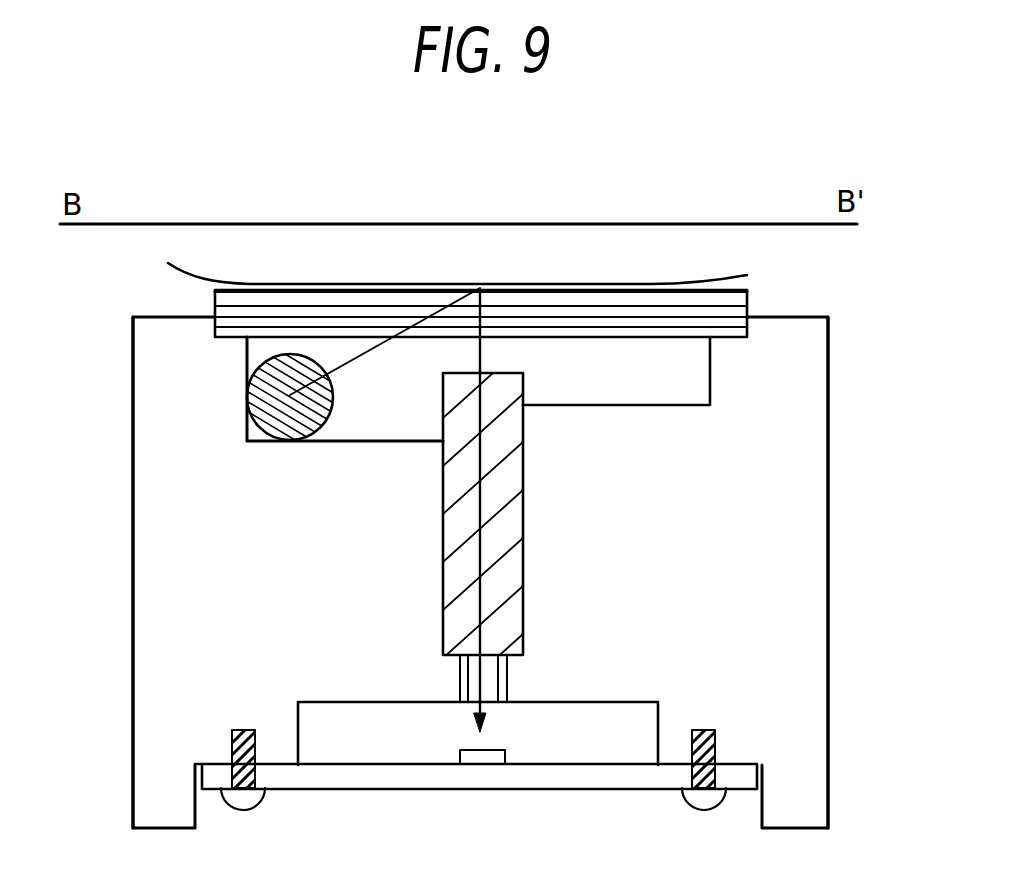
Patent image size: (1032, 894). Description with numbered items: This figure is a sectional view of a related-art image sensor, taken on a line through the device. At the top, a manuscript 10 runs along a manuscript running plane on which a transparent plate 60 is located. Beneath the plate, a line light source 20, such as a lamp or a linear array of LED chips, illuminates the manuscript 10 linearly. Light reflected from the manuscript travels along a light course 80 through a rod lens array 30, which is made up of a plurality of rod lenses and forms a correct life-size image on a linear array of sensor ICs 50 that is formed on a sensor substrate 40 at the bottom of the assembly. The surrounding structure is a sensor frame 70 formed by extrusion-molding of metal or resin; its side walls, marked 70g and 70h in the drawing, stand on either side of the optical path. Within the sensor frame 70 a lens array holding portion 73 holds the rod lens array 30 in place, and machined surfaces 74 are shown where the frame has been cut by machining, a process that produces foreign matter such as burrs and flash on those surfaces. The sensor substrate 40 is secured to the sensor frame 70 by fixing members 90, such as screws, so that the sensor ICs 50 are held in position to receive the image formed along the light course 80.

The manuscript 10 is at (672, 283).
The line light source 20 is at (278, 425).
The rod lens array 30 is at (542, 526).
The sensor substrate 40 is at (433, 778).
The sensor ICs 50 is at (488, 758).
The transparent plate 60 is at (747, 307).
The sensor frame 70 is at (300, 657).
The left side wall of housing 70g is at (153, 533).
The right side wall of housing 70h is at (798, 483).
The lens array holding portion 73 is at (525, 518).
The machined surfaces 74 is at (458, 673).
The light course 80 is at (478, 352).
The fixing members 90 is at (242, 800).